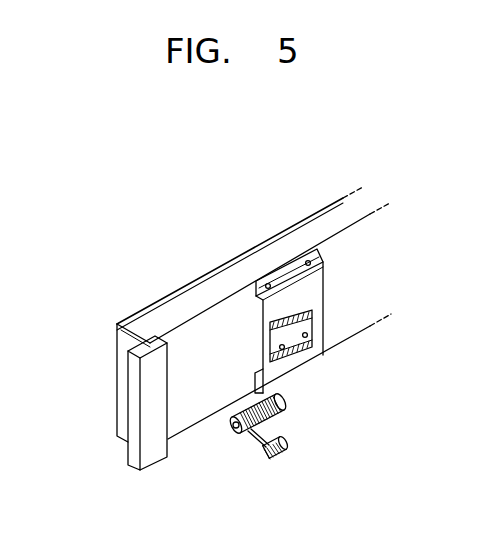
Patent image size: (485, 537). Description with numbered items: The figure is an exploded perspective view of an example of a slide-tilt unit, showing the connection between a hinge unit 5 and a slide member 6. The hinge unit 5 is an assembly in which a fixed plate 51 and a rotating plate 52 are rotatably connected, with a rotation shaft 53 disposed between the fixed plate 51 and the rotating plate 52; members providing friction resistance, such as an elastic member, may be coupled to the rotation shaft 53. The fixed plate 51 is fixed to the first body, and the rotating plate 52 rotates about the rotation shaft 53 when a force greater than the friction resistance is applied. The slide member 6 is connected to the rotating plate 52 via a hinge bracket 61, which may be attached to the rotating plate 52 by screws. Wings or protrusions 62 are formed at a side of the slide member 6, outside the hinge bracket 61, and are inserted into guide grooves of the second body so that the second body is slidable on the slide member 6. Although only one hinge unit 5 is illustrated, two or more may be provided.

The hinge unit 5 is at (228, 442).
The slide member 6 is at (265, 243).
The fixed plate 51 is at (283, 455).
The rotating plate 52 is at (295, 348).
The rotation shaft 53 is at (237, 443).
The hinge bracket 61 is at (325, 288).
The wings (protrusions) 62 is at (128, 414).